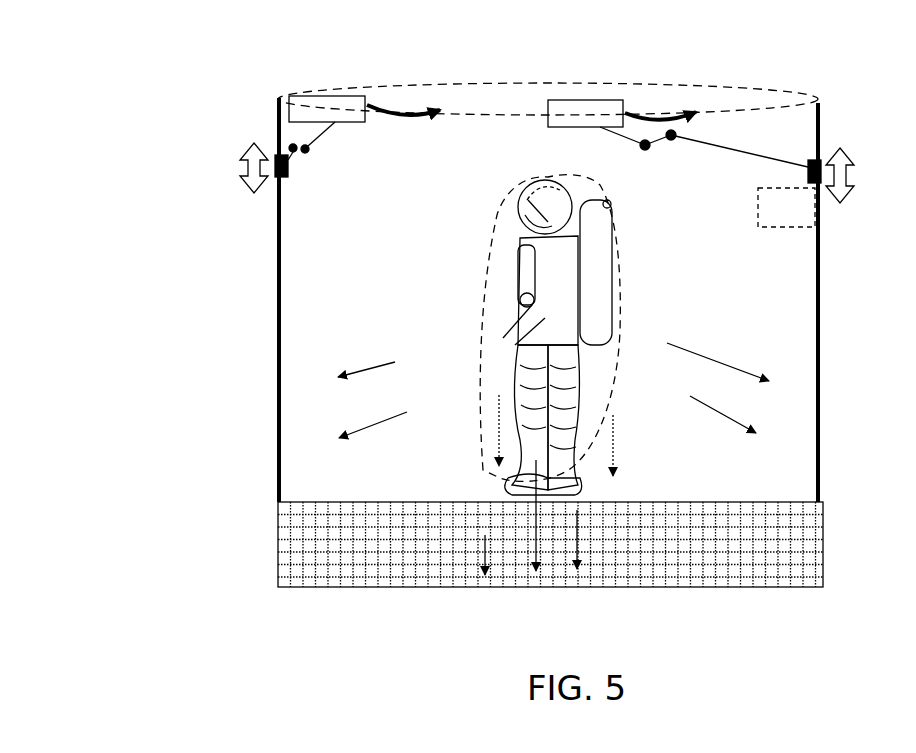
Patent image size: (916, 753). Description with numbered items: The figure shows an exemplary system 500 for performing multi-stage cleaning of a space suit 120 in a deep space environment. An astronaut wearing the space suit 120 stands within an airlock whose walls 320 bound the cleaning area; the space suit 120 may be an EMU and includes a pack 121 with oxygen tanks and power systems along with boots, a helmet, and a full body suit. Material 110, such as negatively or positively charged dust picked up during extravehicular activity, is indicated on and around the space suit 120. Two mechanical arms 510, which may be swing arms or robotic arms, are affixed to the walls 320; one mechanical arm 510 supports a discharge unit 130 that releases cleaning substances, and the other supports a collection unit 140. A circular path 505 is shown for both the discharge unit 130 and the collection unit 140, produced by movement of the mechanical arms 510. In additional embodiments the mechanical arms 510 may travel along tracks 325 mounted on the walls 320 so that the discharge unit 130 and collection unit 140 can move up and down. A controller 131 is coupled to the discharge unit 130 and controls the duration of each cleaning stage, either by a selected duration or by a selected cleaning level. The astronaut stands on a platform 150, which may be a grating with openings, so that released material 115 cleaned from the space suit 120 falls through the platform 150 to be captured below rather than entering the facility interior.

The system 500 is at (113, 59).
The collection unit 140 is at (322, 100).
The discharge unit 130 is at (580, 104).
The circular path 505 is at (670, 84).
The walls 320 is at (818, 120).
The tracks 325 is at (279, 260).
The mechanical arms 510 is at (318, 142).
The controller 131 is at (786, 207).
The material 110 is at (480, 327).
The space suit 120 is at (557, 337).
The pack 121 is at (583, 426).
The released material 115 is at (553, 412).
The platform 150 is at (292, 567).